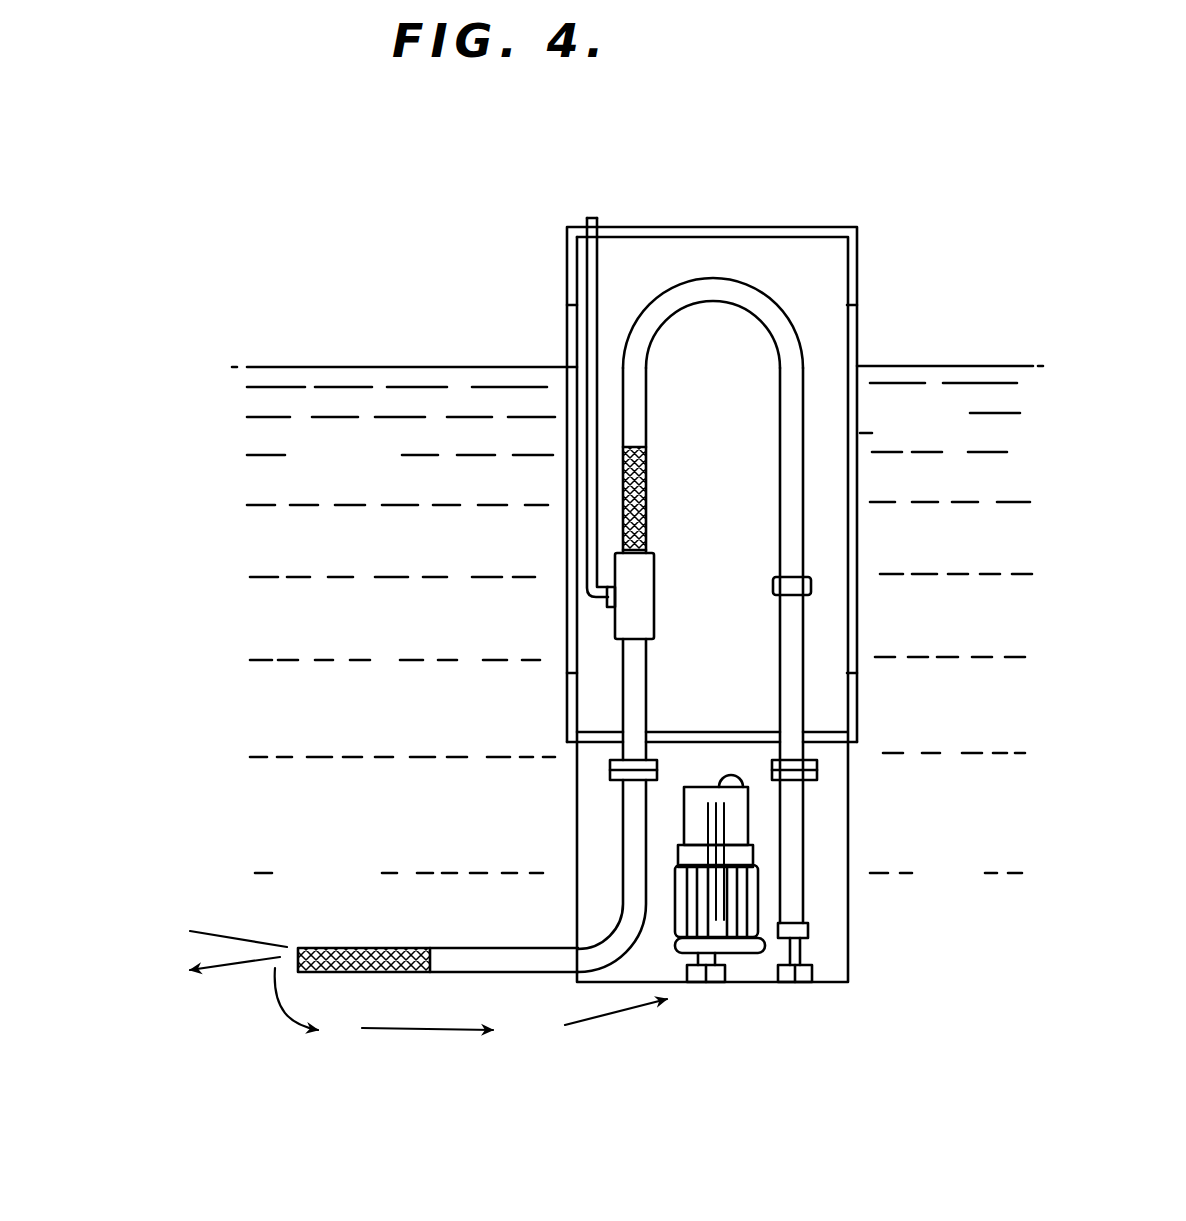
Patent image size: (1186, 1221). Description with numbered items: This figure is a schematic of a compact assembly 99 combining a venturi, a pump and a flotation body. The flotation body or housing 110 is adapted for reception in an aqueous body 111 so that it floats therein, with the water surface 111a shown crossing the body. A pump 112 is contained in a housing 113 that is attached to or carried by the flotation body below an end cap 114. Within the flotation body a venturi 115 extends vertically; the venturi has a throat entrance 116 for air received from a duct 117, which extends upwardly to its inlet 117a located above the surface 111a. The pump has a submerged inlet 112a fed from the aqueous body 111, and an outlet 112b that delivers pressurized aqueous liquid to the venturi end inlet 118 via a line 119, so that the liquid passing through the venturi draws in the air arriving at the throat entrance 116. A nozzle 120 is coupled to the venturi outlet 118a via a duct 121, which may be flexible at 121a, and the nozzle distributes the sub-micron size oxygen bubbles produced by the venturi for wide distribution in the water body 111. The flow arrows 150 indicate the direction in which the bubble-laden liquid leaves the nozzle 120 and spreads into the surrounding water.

The compact assembly 99 is at (892, 228).
The flotation body or housing 110 is at (857, 413).
The aqueous body 111 is at (408, 478).
The surface 111a is at (337, 367).
The pump 112 is at (770, 880).
The submerged inlet 112a is at (707, 983).
The outlet 112b is at (775, 938).
The housing 113 is at (848, 777).
The end cap 114 is at (612, 732).
The venturi 115 is at (608, 626).
The throat entrance 116 is at (617, 597).
The duct 117 is at (592, 332).
The inlet 117a is at (594, 218).
The venturi end inlet 118 is at (640, 537).
The venturi outlet 118a is at (636, 648).
The line 119 is at (797, 625).
The nozzle 120 is at (347, 948).
The duct 121 is at (627, 820).
The flexible portion 121a is at (507, 962).
The water flow 150 is at (407, 1028).